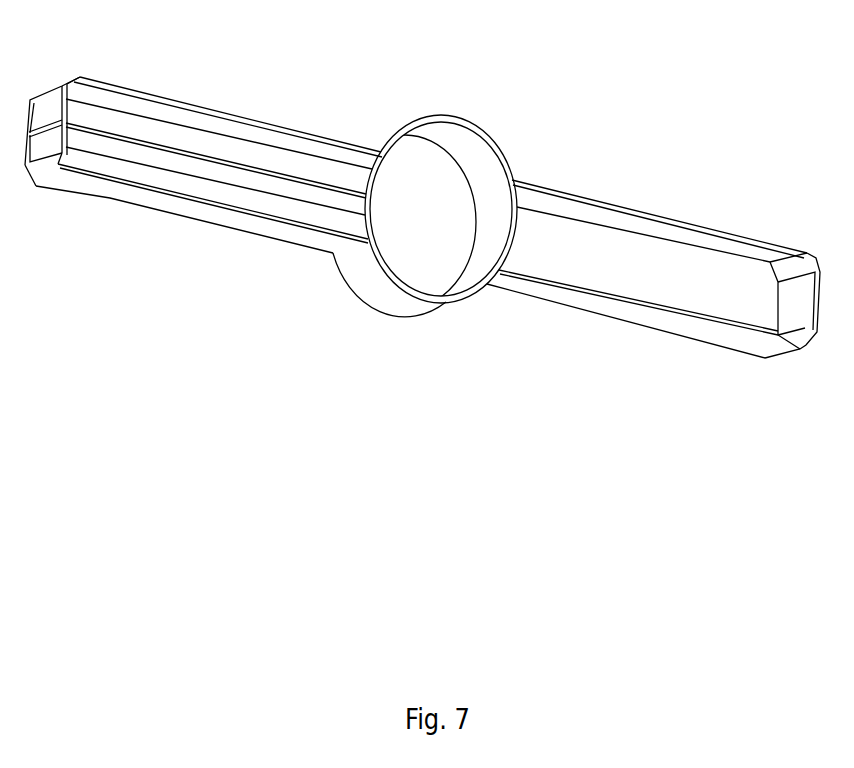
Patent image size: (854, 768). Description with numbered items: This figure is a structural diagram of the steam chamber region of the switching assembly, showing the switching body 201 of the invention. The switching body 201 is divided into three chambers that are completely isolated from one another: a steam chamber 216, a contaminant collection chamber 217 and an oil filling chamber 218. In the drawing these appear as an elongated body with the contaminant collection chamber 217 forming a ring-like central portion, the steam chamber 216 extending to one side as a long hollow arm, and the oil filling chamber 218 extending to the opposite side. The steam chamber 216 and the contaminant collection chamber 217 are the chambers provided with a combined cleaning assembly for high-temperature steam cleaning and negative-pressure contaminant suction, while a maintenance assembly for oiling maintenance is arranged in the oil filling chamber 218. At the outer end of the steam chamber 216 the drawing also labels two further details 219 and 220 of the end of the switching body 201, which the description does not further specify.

The switching body 201 is at (422, 232).
The steam chamber 216 is at (203, 189).
The contaminant collection chamber 217 is at (454, 174).
The oil filling chamber 218 is at (653, 306).
The lower channel of end cap 219 is at (91, 202).
The upper channel of end cap 220 is at (198, 104).